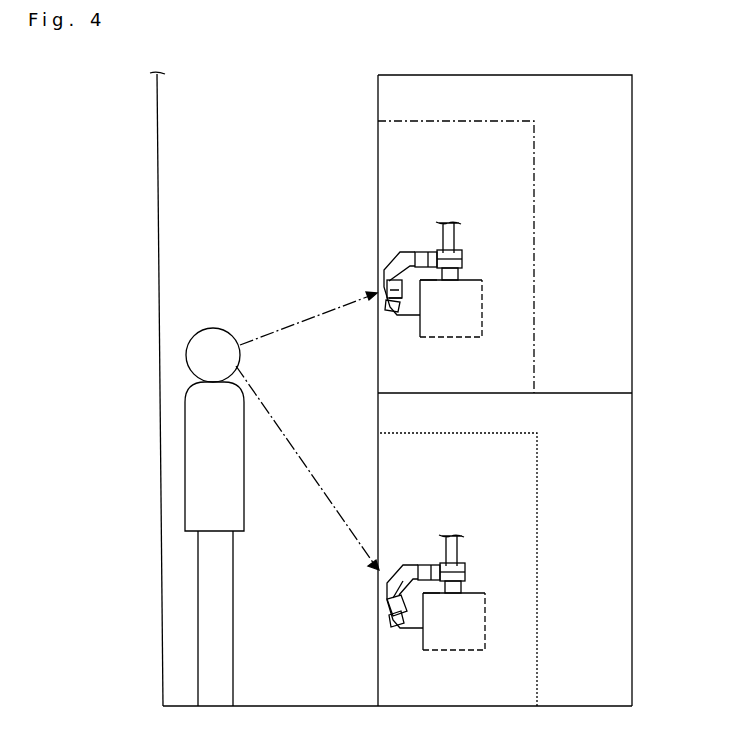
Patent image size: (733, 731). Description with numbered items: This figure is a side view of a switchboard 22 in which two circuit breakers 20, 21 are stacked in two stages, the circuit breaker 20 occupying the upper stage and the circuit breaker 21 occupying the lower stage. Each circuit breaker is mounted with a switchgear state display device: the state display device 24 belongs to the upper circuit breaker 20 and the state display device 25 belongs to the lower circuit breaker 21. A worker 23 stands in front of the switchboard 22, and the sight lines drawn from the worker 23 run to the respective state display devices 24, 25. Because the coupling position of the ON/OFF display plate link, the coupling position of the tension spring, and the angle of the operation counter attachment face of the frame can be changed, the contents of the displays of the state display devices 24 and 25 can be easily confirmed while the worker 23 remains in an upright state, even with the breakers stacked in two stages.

The circuit breaker 20 is at (535, 178).
The circuit breaker 21 is at (540, 468).
The switchboard 22 is at (630, 101).
The worker 23 is at (192, 470).
The state display device 24 is at (462, 259).
The state display device 25 is at (465, 572).